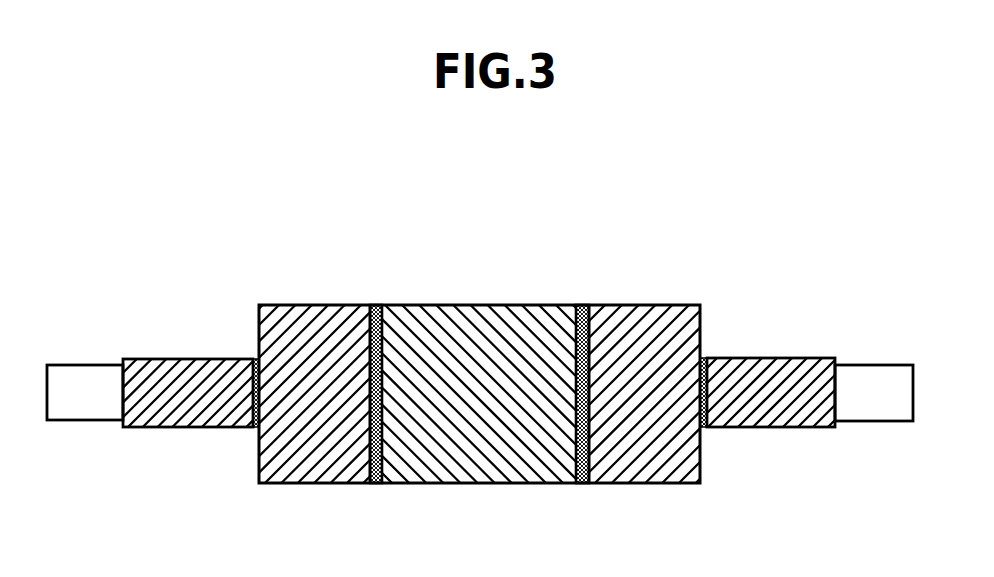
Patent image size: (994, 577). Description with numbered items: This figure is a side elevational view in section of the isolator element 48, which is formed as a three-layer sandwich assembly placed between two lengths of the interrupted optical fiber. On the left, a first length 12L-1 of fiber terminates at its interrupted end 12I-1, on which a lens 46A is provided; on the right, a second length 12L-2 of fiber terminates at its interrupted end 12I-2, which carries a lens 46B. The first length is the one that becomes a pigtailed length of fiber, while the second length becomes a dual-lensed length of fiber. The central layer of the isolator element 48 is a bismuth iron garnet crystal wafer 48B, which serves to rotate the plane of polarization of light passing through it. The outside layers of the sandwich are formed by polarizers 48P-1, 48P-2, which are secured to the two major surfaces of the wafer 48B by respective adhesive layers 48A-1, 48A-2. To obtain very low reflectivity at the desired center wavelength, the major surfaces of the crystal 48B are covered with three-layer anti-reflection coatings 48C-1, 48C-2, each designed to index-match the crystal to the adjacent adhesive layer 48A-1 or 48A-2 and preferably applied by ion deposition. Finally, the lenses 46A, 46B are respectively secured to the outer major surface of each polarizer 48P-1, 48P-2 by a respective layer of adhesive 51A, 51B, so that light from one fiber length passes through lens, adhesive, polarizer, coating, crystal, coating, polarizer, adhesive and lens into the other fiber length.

The first length of optical fiber 12L-1 is at (73, 406).
The interrupted end 12I-1 is at (123, 366).
The lens 46A is at (218, 360).
The layer of adhesive 51A is at (257, 360).
The isolator element 48 is at (484, 370).
The polarizer 48P-1 is at (312, 308).
The adhesive layer 48A-1 is at (377, 305).
The anti-reflection coating 48C-1 is at (380, 305).
The bismuth iron garnet crystal wafer 48B is at (518, 312).
The anti-reflection coating 48C-2 is at (580, 305).
The adhesive layer 48A-2 is at (588, 305).
The polarizer 48P-2 is at (637, 312).
The layer of adhesive 51B is at (703, 358).
The lens 46B is at (775, 376).
The second length of optical fiber 12L-2 is at (883, 377).
The interrupted end 12I-2 is at (837, 393).